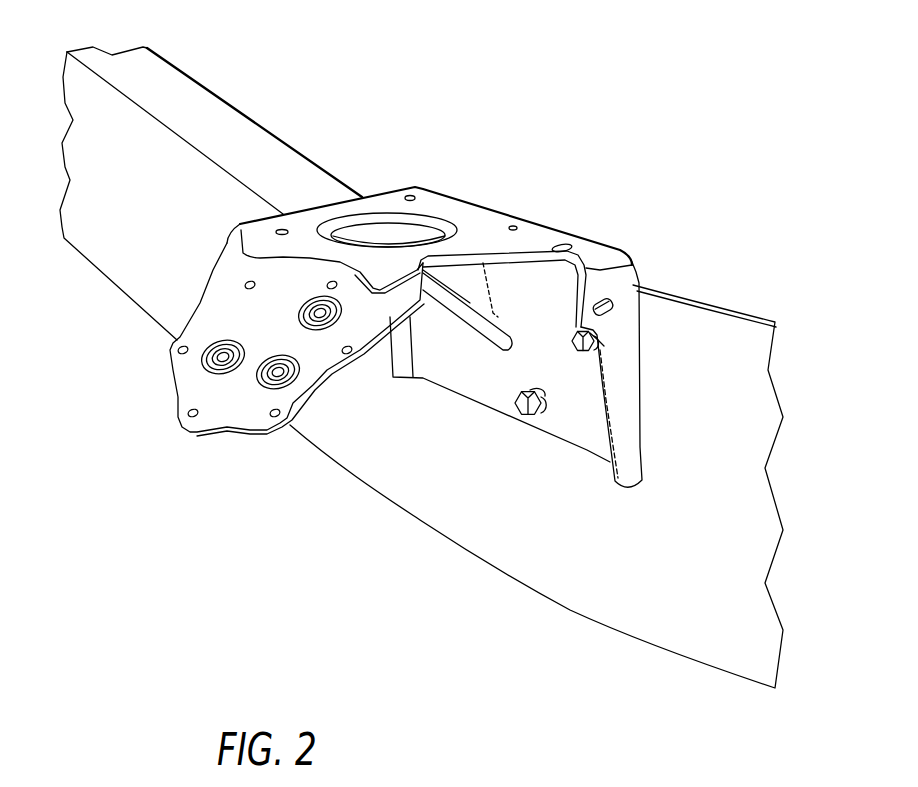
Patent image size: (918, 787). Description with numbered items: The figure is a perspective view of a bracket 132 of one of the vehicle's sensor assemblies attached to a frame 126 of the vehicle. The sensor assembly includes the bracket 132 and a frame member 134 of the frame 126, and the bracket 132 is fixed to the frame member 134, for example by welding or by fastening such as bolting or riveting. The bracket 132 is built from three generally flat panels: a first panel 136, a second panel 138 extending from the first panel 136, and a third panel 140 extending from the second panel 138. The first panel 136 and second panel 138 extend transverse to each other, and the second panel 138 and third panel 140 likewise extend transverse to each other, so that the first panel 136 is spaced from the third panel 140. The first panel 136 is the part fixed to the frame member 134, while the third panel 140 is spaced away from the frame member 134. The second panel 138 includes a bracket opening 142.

The frame 126 is at (196, 68).
The bracket 132 is at (587, 240).
The frame member 134 is at (723, 367).
The first panel 136 is at (582, 424).
The second panel 138 is at (482, 233).
The third panel 140 is at (240, 405).
The bracket opening 142 is at (392, 227).